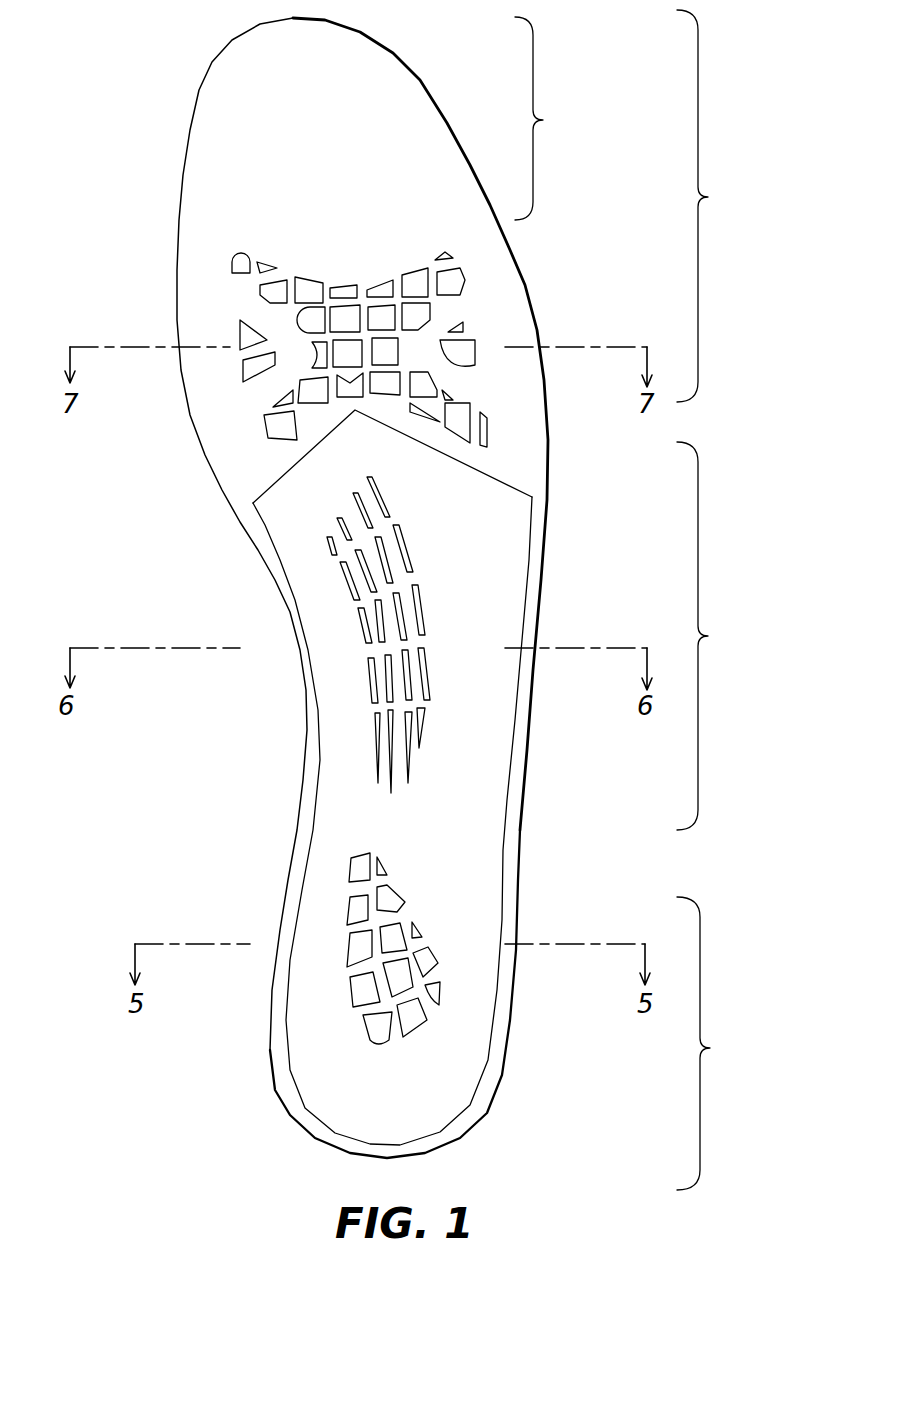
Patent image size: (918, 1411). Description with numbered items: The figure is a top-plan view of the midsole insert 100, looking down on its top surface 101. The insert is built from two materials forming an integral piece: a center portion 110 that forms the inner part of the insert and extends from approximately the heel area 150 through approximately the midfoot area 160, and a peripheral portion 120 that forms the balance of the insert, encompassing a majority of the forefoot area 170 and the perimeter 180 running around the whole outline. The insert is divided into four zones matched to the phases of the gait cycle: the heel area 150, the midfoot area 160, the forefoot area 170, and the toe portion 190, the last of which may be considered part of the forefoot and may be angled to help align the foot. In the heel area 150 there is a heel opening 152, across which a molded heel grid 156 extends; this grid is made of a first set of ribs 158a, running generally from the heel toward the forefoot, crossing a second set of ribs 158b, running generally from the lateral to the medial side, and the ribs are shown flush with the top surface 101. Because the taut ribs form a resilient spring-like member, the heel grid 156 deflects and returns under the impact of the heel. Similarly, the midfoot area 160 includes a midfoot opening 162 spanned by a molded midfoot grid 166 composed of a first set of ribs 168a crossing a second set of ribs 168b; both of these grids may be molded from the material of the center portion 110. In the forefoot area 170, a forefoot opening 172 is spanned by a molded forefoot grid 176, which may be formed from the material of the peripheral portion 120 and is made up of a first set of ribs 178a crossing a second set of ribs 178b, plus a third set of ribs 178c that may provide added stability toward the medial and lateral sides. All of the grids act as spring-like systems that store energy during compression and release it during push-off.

The midsole insert 100 is at (165, 52).
The top surface 101 is at (386, 100).
The center portion 110 is at (490, 718).
The peripheral portion 120 is at (518, 463).
The heel area 150 is at (710, 1048).
The heel opening 152 is at (388, 900).
The heel grid 156 is at (337, 960).
The first set of ribs 158a is at (413, 990).
The second set of ribs 158b is at (365, 1013).
The midfoot area 160 is at (708, 636).
The midfoot opening 162 is at (423, 625).
The midfoot grid 166 is at (358, 650).
The first set of ribs 168a is at (395, 555).
The second set of ribs 168b is at (410, 578).
The forefoot area 170 is at (708, 197).
The forefoot opening 172 is at (280, 427).
The forefoot grid 176 is at (357, 323).
The first set of ribs 178a is at (398, 277).
The second set of ribs 178b is at (272, 411).
The third set of ribs 178c is at (242, 295).
The perimeter 180 is at (263, 533).
The toe portion 190 is at (543, 120).